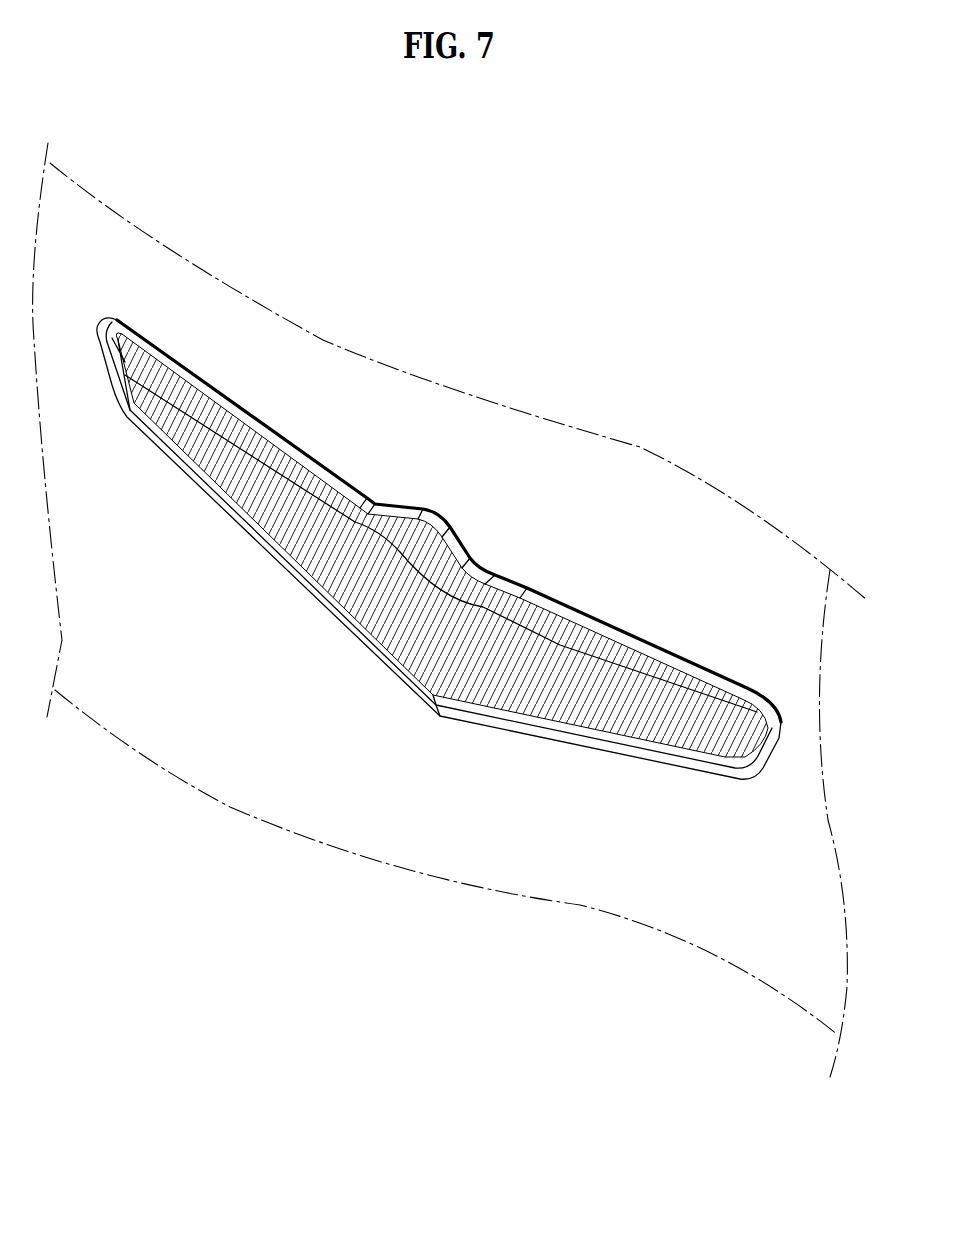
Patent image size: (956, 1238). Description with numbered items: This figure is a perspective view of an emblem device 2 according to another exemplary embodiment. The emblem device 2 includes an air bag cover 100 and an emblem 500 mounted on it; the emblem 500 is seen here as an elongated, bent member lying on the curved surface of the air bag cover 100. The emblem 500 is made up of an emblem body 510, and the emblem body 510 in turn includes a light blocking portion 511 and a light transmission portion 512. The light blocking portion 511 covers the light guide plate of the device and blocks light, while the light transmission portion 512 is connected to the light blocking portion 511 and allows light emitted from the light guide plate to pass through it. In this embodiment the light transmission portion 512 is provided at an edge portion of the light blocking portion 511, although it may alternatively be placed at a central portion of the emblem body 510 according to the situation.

The emblem device 2 is at (751, 194).
The air bag cover 100 is at (686, 882).
The emblem 500 is at (640, 652).
The emblem body 510 is at (603, 357).
The light blocking portion 511 is at (455, 556).
The light transmission portion 512 is at (490, 585).